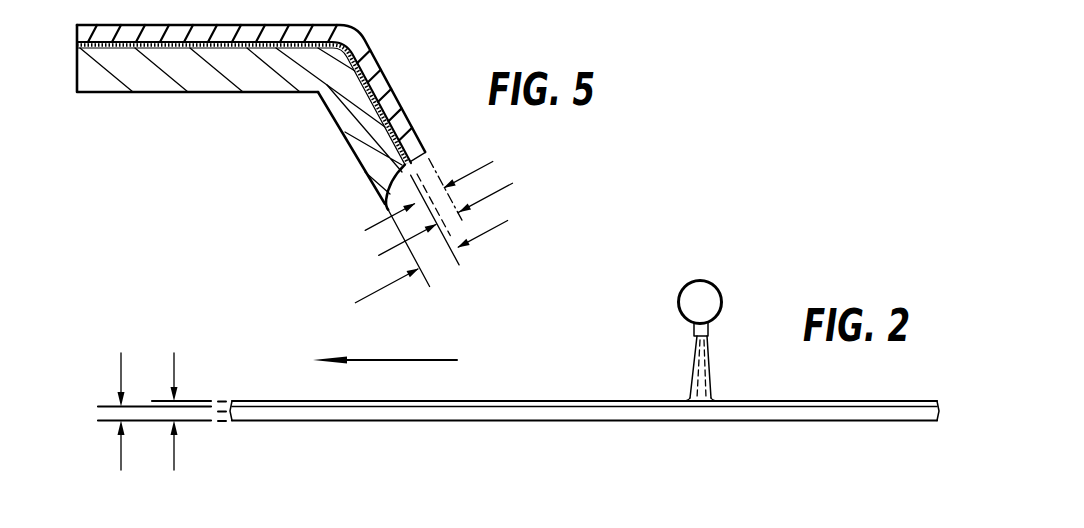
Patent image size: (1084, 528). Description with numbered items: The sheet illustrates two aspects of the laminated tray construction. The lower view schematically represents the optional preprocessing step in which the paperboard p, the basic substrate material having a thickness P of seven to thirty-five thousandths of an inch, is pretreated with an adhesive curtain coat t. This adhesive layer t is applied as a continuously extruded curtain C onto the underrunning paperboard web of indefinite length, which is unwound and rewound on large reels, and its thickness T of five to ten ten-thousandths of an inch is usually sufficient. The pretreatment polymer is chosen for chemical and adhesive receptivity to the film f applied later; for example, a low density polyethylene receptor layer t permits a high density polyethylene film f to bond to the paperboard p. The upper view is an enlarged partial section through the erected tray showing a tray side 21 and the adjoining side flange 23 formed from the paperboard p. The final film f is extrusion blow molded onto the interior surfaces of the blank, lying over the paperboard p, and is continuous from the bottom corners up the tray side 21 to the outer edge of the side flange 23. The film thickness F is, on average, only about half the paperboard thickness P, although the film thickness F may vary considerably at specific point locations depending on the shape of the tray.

In FIG. 5, the tray side 21 is at (362, 142).
In FIG. 5, the side flange 23 is at (162, 71).
In FIG. 5, the film f is at (412, 111).
In FIG. 5, the paperboard p is at (374, 188).
In FIG. 5, the adhesive layer thickness T is at (437, 185).
In FIG. 2, the adhesive layer thickness T is at (177, 400).
In FIG. 5, the film thickness F is at (451, 211).
In FIG. 5, the paperboard thickness P is at (440, 253).
In FIG. 2, the paperboard thickness P is at (876, 375).
In FIG. 2, the curtain coat t is at (335, 401).
In FIG. 2, the extruded curtain C is at (711, 378).